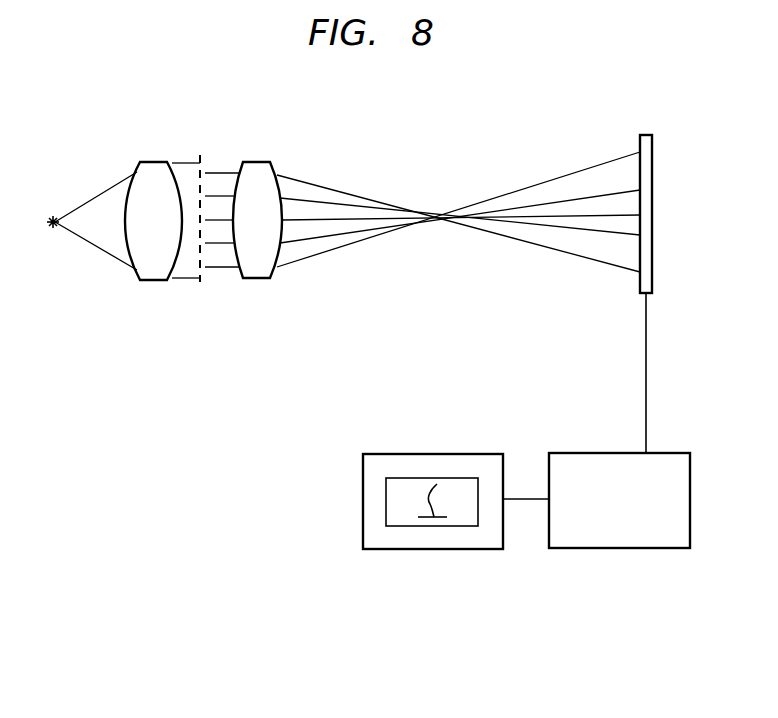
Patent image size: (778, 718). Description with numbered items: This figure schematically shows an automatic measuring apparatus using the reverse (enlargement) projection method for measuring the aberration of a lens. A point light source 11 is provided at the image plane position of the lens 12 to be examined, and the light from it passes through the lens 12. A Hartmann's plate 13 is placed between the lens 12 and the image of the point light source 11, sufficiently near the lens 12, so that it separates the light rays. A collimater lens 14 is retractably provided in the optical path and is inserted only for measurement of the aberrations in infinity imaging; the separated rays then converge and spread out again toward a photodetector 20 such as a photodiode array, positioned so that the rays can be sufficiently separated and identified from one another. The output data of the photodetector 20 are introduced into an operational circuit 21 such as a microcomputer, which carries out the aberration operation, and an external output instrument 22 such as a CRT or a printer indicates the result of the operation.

The point light source 11 is at (53, 230).
The lens to be examined 12 is at (153, 282).
The Hartmann's plate 13 is at (201, 284).
The collimater lens 14 is at (257, 281).
The photodetector 20 is at (640, 141).
The operational circuit 21 is at (597, 453).
The external output instrument 22 is at (430, 454).